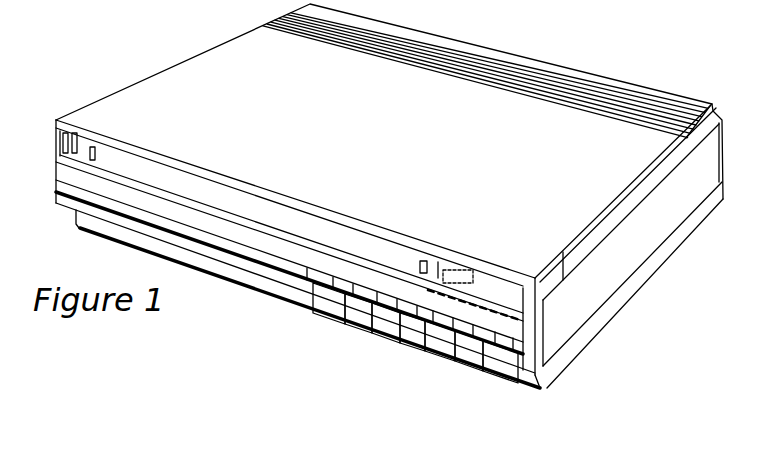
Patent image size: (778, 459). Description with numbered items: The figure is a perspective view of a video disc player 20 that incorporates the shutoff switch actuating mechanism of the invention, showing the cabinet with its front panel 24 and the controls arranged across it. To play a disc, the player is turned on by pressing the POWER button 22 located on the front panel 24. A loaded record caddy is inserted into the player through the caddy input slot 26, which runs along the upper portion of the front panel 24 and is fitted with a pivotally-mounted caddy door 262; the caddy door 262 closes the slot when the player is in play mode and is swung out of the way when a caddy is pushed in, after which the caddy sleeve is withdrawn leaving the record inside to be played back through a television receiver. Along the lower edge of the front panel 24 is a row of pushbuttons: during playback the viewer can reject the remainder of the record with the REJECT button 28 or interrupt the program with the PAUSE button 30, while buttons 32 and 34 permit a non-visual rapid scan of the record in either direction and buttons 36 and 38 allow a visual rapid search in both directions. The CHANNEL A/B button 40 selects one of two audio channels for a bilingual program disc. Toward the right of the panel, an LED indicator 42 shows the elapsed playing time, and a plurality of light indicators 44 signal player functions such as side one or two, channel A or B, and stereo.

The video disc player 20 is at (638, 368).
The POWER button 22 is at (503, 328).
The front panel 24 is at (132, 213).
The caddy input slot 26 is at (110, 160).
The REJECT button 28 is at (445, 322).
The PAUSE button 30 is at (422, 312).
The rapid scan button 32 is at (395, 301).
The rapid scan button 34 is at (372, 296).
The visual rapid search button 36 is at (352, 296).
The visual rapid search button 38 is at (320, 307).
The CHANNEL A/B button 40 is at (325, 275).
The LED indicator 42 is at (462, 273).
The light indicators 44 is at (536, 389).
The caddy door 262 is at (133, 163).